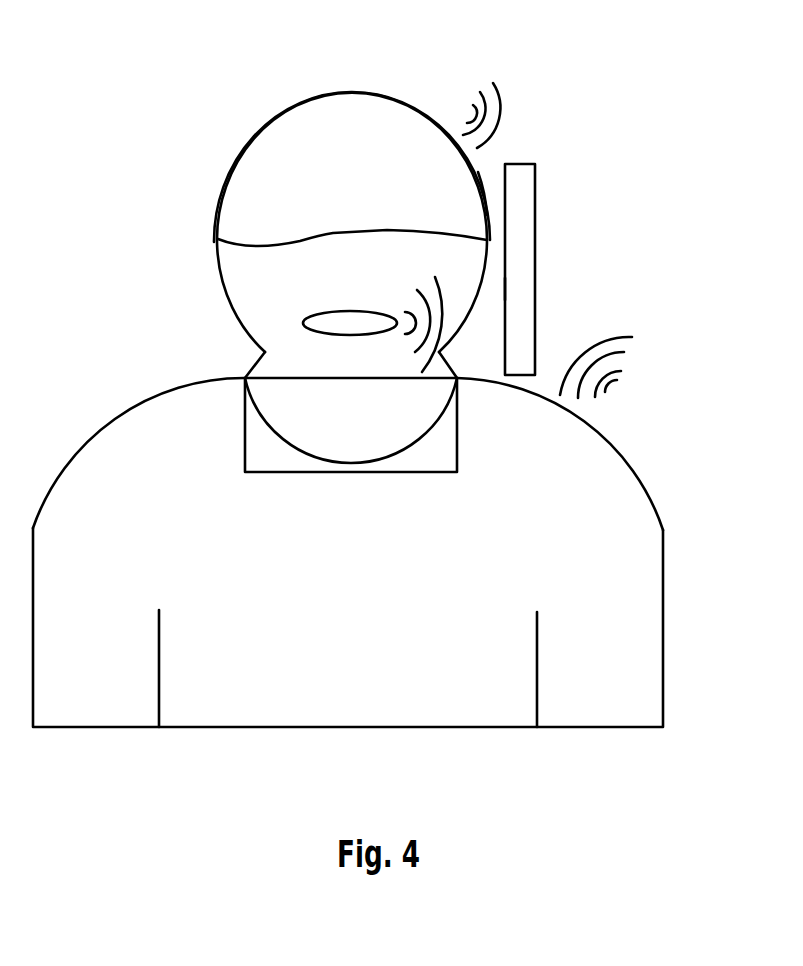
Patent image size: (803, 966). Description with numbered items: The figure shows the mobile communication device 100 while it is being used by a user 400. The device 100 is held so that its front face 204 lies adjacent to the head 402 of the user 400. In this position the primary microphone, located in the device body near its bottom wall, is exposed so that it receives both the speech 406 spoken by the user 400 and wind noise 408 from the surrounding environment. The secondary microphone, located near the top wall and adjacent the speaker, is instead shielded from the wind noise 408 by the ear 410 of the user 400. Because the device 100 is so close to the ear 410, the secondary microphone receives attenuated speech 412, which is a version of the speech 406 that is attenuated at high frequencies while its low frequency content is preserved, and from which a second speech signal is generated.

The device 100 is at (559, 149).
The front face 204 is at (498, 301).
The user 400 is at (378, 783).
The head 402 is at (209, 187).
The speech 406 is at (392, 283).
The wind noise 408 is at (628, 400).
The ear 410 is at (492, 174).
The attenuated speech 412 is at (458, 100).